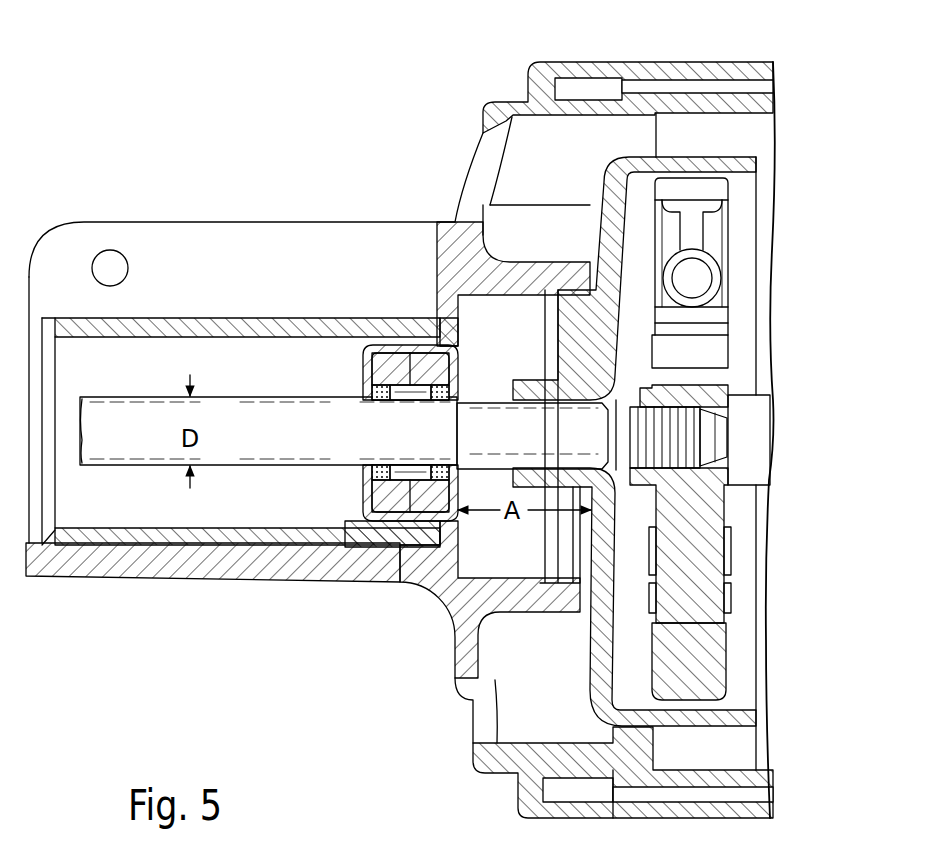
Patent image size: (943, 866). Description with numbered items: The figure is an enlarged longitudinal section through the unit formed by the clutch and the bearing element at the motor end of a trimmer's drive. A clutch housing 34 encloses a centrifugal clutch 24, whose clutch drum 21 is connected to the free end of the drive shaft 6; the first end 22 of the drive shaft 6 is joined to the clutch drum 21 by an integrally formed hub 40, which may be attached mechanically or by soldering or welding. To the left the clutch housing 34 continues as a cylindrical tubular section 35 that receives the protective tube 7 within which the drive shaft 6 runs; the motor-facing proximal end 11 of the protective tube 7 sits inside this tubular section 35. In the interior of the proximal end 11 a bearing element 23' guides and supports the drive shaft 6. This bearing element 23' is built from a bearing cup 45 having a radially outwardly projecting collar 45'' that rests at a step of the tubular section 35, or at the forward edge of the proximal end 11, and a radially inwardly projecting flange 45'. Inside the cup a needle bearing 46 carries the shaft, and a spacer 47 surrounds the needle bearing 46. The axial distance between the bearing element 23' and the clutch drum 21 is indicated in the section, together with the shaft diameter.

The drive shaft 6 is at (107, 456).
The protective tube 7 is at (153, 325).
The proximal end 11 is at (353, 372).
The clutch drum 21 is at (706, 160).
The first end 22 is at (505, 415).
The bearing element 23' is at (350, 289).
The centrifugal clutch 24 is at (766, 638).
The clutch housing 34 is at (490, 122).
The tubular section 35 is at (173, 560).
The hub 40 is at (525, 388).
The bearing cup 45 is at (392, 586).
The radially inwardly projecting flange 45' is at (375, 558).
The radially outwardly projecting collar 45'' is at (410, 558).
The needle bearing 46 is at (420, 390).
The spacer 47 is at (392, 362).